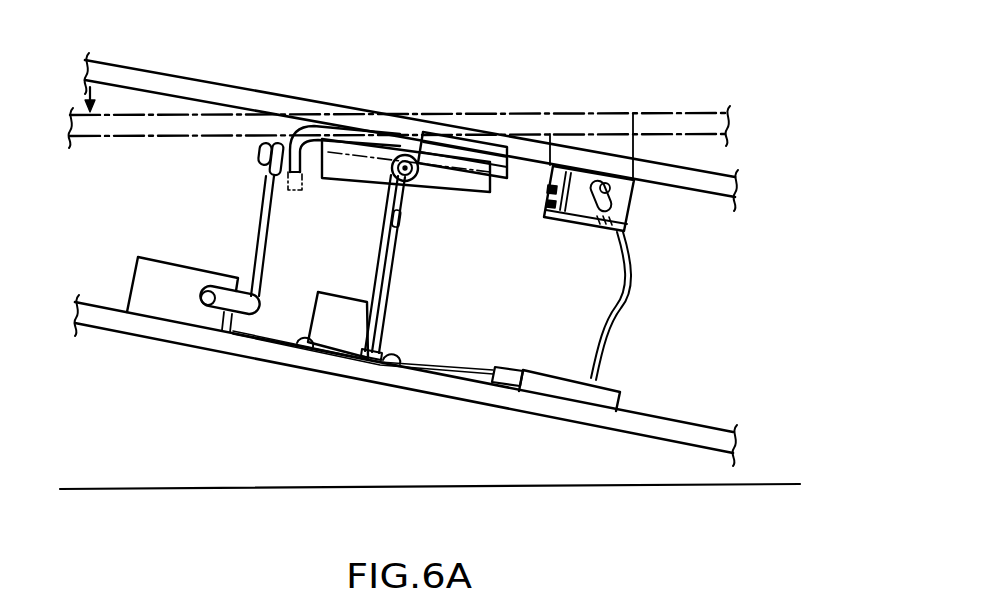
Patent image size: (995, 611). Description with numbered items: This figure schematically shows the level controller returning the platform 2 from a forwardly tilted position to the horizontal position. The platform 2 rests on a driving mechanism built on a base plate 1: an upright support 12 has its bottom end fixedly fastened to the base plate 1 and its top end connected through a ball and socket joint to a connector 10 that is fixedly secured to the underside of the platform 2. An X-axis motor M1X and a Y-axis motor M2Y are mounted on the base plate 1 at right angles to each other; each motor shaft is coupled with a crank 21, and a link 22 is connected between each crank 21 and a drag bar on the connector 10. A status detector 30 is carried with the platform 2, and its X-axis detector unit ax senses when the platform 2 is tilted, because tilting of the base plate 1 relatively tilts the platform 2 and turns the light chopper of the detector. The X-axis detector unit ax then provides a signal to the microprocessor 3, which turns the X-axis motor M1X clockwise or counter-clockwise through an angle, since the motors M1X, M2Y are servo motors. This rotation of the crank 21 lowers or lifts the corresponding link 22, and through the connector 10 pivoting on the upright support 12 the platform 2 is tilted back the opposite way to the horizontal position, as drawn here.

The base plate 1 is at (275, 356).
The platform 2 is at (198, 83).
The microprocessor 3 is at (547, 392).
The connector 10 is at (481, 183).
The upright support 12 is at (393, 255).
The crank 21 is at (223, 305).
The link 22 is at (263, 233).
The status detector 30 is at (631, 203).
The X-axis detector unit ax is at (623, 228).
The X-axis motor M1X is at (143, 282).
The Y-axis motor M2Y is at (348, 343).